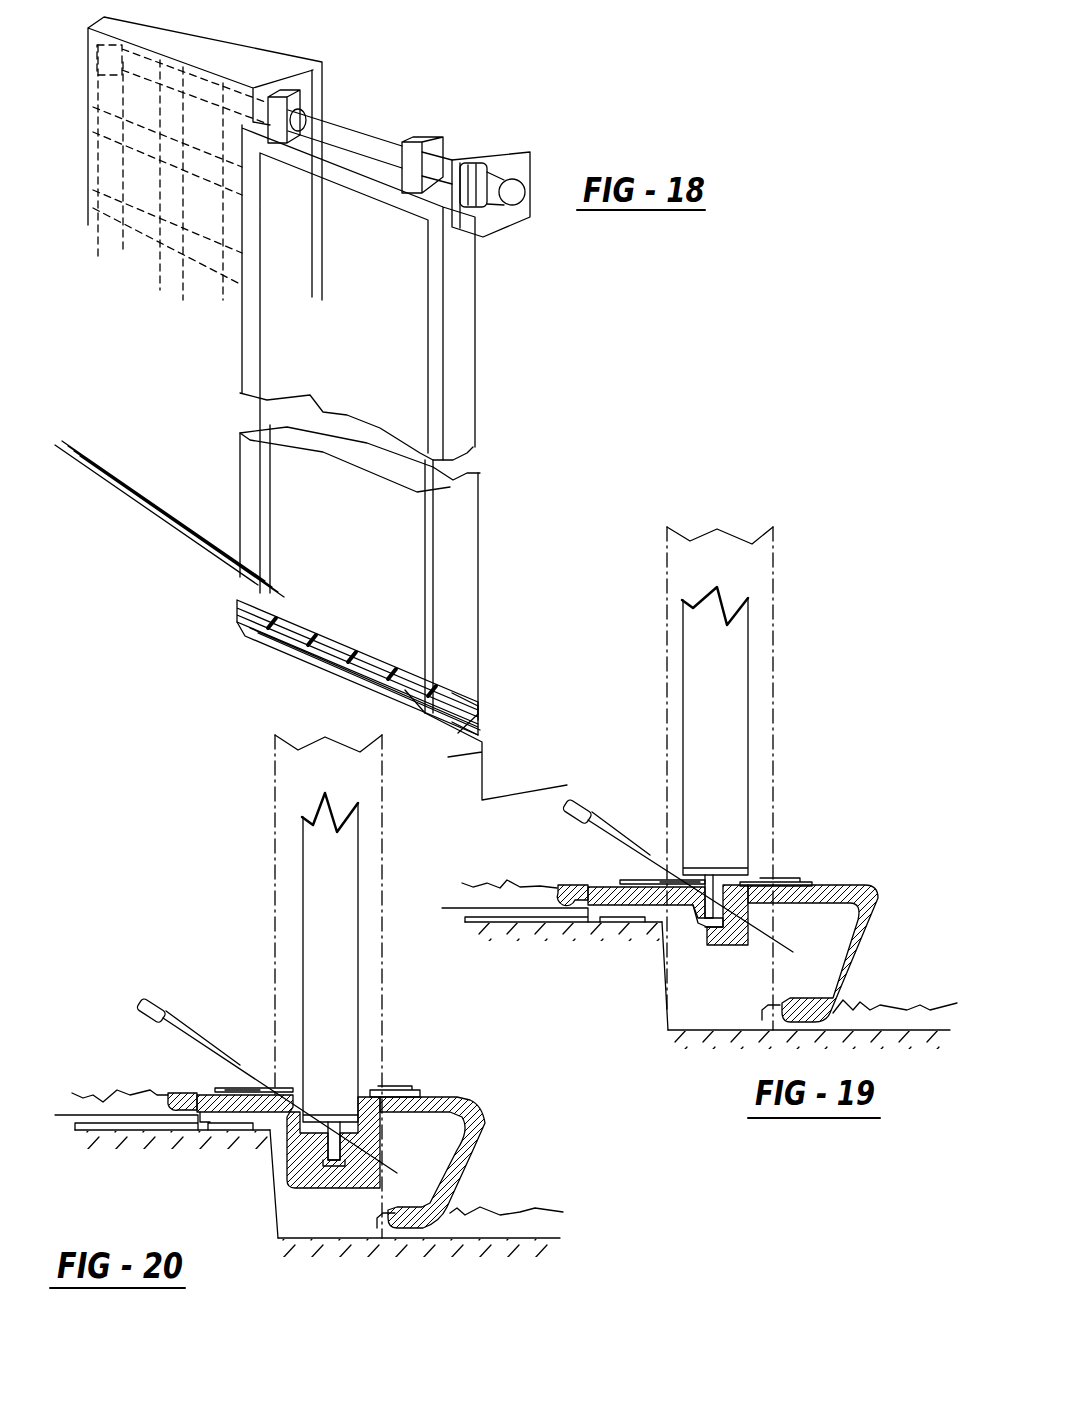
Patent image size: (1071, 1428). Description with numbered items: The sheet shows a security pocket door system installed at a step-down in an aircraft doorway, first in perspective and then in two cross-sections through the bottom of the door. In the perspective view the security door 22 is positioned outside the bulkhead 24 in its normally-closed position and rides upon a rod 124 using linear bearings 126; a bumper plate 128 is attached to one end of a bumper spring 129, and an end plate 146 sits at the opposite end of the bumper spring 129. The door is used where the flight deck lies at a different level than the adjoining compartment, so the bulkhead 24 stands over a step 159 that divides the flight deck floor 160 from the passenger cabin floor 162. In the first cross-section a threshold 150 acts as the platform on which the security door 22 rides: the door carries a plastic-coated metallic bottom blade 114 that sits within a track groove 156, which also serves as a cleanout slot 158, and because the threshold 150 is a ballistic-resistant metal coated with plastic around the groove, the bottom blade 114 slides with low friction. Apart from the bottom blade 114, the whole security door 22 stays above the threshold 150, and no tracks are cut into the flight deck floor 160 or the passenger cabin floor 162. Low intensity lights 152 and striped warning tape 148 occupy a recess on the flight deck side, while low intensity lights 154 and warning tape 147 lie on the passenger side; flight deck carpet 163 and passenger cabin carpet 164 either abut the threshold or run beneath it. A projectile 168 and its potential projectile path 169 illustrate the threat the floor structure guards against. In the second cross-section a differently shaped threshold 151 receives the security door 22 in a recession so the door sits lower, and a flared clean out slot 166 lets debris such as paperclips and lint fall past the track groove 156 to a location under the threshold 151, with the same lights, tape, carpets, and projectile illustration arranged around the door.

In FIG. 18, the security door 22 is at (477, 397).
In FIG. 19, the security door 22 is at (748, 665).
In FIG. 20, the security door 22 is at (303, 898).
In FIG. 18, the bulkhead 24 is at (192, 28).
In FIG. 19, the bulkhead 24 is at (773, 605).
In FIG. 20, the bulkhead 24 is at (275, 815).
In FIG. 19, the bottom blade 114 is at (712, 918).
In FIG. 20, the bottom blade 114 is at (328, 1137).
In FIG. 18, the rod 124 is at (353, 120).
In FIG. 18, the linear bearings 126 is at (305, 92).
In FIG. 18, the bumper plate 128 is at (478, 157).
In FIG. 18, the bumper spring 129 is at (510, 172).
In FIG. 18, the end plate 146 is at (503, 233).
In FIG. 18, the warning tape 147 is at (360, 630).
In FIG. 19, the warning tape 147 is at (823, 880).
In FIG. 20, the warning tape 147 is at (417, 1095).
In FIG. 18, the warning tape 148 is at (287, 633).
In FIG. 19, the warning tape 148 is at (583, 880).
In FIG. 20, the warning tape 148 is at (170, 1108).
In FIG. 19, the threshold 150 is at (877, 900).
In FIG. 20, the threshold 151 is at (483, 1100).
In FIG. 18, the low intensity lights 152 is at (403, 655).
In FIG. 19, the low intensity lights 152 is at (812, 880).
In FIG. 20, the low intensity lights 152 is at (398, 1088).
In FIG. 18, the low intensity lights 154 is at (333, 667).
In FIG. 19, the low intensity lights 154 is at (633, 880).
In FIG. 20, the low intensity lights 154 is at (215, 1088).
In FIG. 19, the track groove 156 is at (710, 927).
In FIG. 20, the track groove 156 is at (353, 1143).
In FIG. 19, the cleanout slot 158 is at (695, 945).
In FIG. 19, the step 159 is at (667, 937).
In FIG. 20, the step 159 is at (272, 1190).
In FIG. 19, the flight deck floor 160 is at (943, 1033).
In FIG. 20, the flight deck floor 160 is at (473, 1240).
In FIG. 19, the passenger cabin floor 162 is at (482, 927).
In FIG. 20, the passenger cabin floor 162 is at (93, 1130).
In FIG. 20, the flight deck carpet 163 is at (547, 1210).
In FIG. 19, the passenger cabin carpet 164 is at (527, 887).
In FIG. 20, the passenger cabin carpet 164 is at (100, 1110).
In FIG. 20, the flared clean out slot 166 is at (350, 1173).
In FIG. 19, the projectile 168 is at (585, 803).
In FIG. 20, the projectile 168 is at (150, 997).
In FIG. 19, the projectile path 169 is at (637, 882).
In FIG. 20, the projectile path 169 is at (232, 1090).